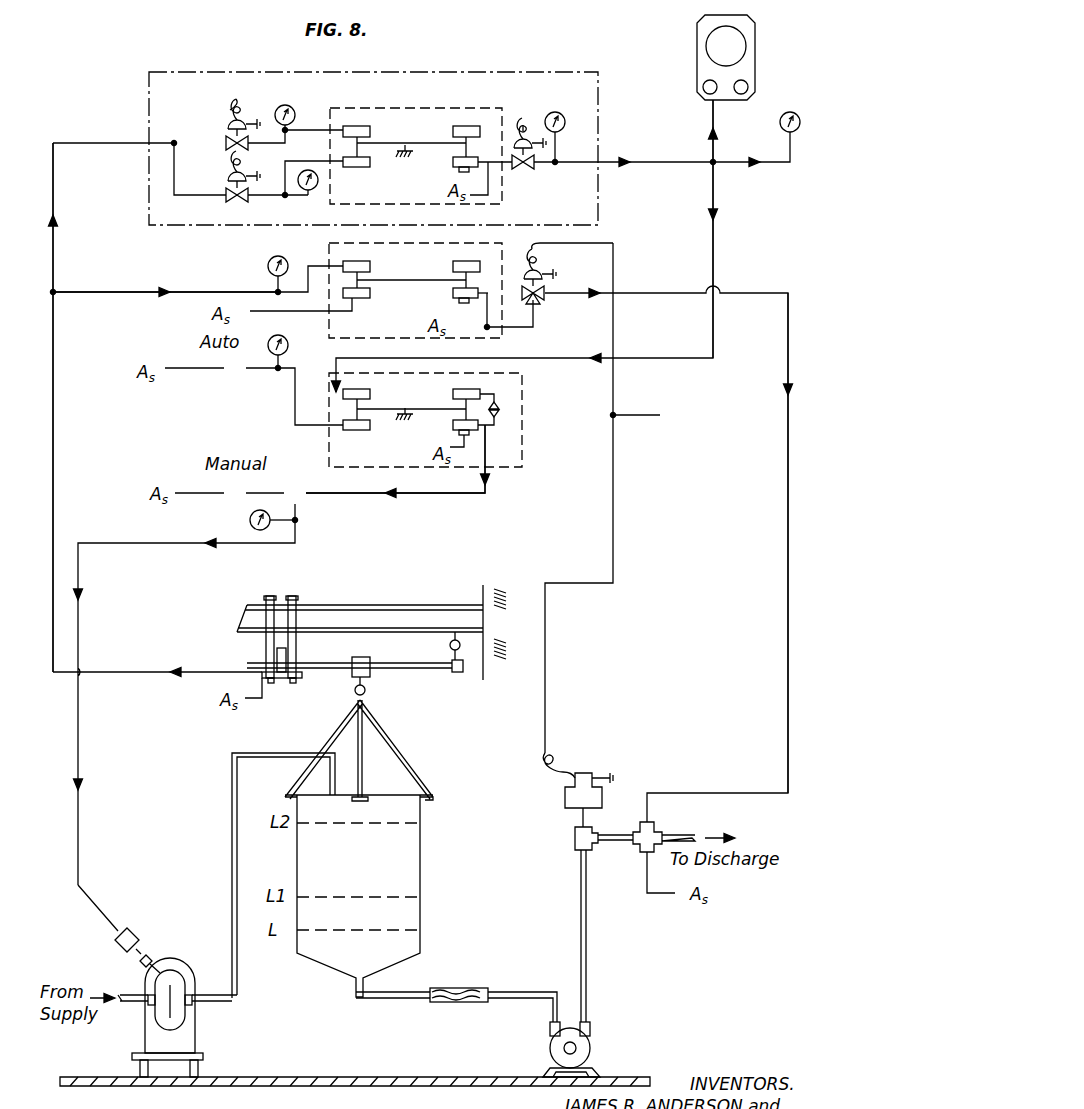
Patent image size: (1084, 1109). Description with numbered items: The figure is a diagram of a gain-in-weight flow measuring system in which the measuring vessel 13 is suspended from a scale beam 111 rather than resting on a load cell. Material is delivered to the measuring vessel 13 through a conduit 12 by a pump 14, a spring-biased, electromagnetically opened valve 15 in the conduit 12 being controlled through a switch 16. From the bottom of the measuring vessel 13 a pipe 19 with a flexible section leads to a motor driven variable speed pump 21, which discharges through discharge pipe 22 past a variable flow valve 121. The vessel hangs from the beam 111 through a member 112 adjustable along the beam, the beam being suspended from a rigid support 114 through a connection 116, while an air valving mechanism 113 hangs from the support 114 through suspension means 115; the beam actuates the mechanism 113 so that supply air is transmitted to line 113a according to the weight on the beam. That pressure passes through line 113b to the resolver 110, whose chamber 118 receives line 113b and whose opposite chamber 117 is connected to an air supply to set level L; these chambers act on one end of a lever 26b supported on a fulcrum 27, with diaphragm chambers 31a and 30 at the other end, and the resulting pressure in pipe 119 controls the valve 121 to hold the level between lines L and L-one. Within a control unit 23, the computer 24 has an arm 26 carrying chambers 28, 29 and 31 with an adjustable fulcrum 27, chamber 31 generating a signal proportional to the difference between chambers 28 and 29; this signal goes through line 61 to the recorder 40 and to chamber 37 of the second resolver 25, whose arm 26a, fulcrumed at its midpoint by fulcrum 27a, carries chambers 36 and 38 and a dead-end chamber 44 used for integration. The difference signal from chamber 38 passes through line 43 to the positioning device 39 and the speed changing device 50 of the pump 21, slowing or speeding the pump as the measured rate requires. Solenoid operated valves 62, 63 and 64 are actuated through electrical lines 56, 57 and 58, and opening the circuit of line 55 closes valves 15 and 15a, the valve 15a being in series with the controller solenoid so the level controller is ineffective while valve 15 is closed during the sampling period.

The conduit 12 is at (232, 870).
The measuring vessel 13 is at (431, 858).
The pump 14 is at (590, 1048).
The valve 15 is at (575, 840).
The valve 15a is at (545, 270).
The switch 16 is at (565, 800).
The pipe 19 is at (407, 1000).
The motor driven variable speed pump 21 is at (195, 1025).
The discharge pipe 22 is at (612, 842).
The control unit 23 is at (507, 68).
The computer or resolver 24 is at (467, 107).
The resolver 25 is at (530, 452).
The arm 26 is at (380, 143).
The arm 26a is at (380, 410).
The lever 26b is at (388, 281).
The fulcrum 27 is at (413, 151).
The fulcrum 27a is at (413, 414).
The diaphragm chamber 28 is at (365, 127).
The diaphragm chamber 29 is at (360, 167).
The diaphragm chamber 30 is at (452, 298).
The diaphragm chamber 31 is at (455, 131).
The diaphragm chamber 31a is at (453, 266).
The diaphragm chamber 36 is at (358, 430).
The diaphragm chamber 37 is at (368, 395).
The diaphragm chamber 38 is at (453, 394).
The positioning device 39 is at (130, 928).
The recorder 40 is at (697, 62).
The line 43 is at (475, 500).
The dead-end chamber 44 is at (485, 424).
The speed changing device 50 is at (147, 952).
The line 55 is at (638, 415).
The line 56 is at (212, 143).
The line 57 is at (222, 180).
The line 58 is at (518, 118).
The line 61 is at (718, 258).
The solenoid operated valve 62 is at (238, 112).
The solenoid operated valve 63 is at (240, 190).
The solenoid operated valve 64 is at (524, 125).
The resolver 110 is at (322, 253).
The scale beam 111 is at (386, 663).
The member 112 is at (355, 657).
The air valving mechanism 113 is at (283, 678).
The line 113a is at (55, 458).
The line 113b is at (190, 292).
The rigid support 114 is at (388, 605).
The suspension means 115 is at (297, 610).
The connection 116 is at (462, 645).
The chamber 117 is at (362, 298).
The chamber 118 is at (365, 263).
The pipe 119 is at (788, 505).
The variable flow valve 121 is at (650, 823).